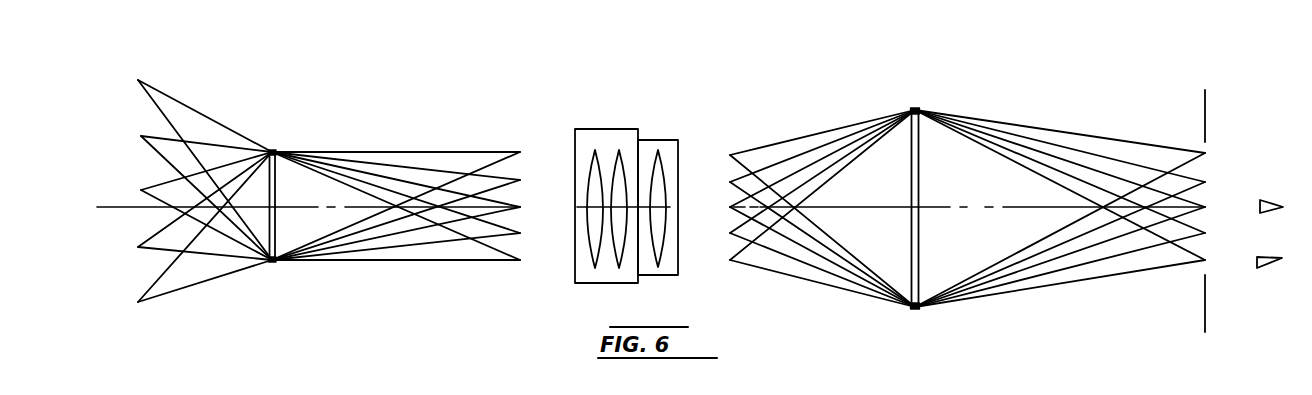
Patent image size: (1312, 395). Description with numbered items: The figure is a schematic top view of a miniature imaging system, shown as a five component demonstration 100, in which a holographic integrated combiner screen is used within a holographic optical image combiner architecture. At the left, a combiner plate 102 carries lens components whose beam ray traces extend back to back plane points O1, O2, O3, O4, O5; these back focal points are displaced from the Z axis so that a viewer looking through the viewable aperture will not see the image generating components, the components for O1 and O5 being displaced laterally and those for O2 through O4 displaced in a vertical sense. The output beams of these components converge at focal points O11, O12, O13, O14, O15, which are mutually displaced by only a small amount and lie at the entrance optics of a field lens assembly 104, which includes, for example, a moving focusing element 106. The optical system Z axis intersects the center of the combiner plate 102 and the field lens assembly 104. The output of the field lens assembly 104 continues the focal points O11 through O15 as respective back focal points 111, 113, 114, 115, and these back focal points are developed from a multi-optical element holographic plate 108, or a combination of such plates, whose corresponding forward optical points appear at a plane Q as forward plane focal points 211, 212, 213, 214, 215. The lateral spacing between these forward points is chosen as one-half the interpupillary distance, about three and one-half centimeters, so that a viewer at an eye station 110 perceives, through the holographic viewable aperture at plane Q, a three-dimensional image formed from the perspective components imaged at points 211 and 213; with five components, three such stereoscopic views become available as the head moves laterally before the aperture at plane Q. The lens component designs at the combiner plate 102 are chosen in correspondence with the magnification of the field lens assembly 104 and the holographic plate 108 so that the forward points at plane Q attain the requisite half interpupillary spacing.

The five component demonstration 100 is at (508, 82).
The combiner plate 102 is at (272, 149).
The field lens assembly 104 is at (637, 114).
The moving focusing element 106 is at (657, 140).
The multi-optical element holographic plate 108 is at (915, 109).
The eye station 110 is at (1262, 268).
The back focal point 111 is at (805, 208).
The back focal point 113 is at (805, 208).
The back focal point 114 is at (805, 208).
The back focal point 115 is at (805, 208).
The forward plane focal point 211 is at (1082, 208).
The forward plane focal point 212 is at (1082, 208).
The forward plane focal point 213 is at (1082, 208).
The forward plane focal point 214 is at (1082, 208).
The forward plane focal point 215 is at (1082, 208).
The back plane point O1 is at (191, 164).
The back plane point O2 is at (191, 192).
The back plane point O3 is at (191, 206).
The back plane point O4 is at (189, 206).
The back plane point O5 is at (189, 233).
The output beam focal point O11 is at (419, 200).
The output beam focal point O12 is at (419, 206).
The output beam focal point O13 is at (419, 206).
The output beam focal point O14 is at (419, 206).
The output beam focal point O15 is at (419, 212).
The plane Q is at (1205, 112).
The optical system Z axis Z is at (953, 208).